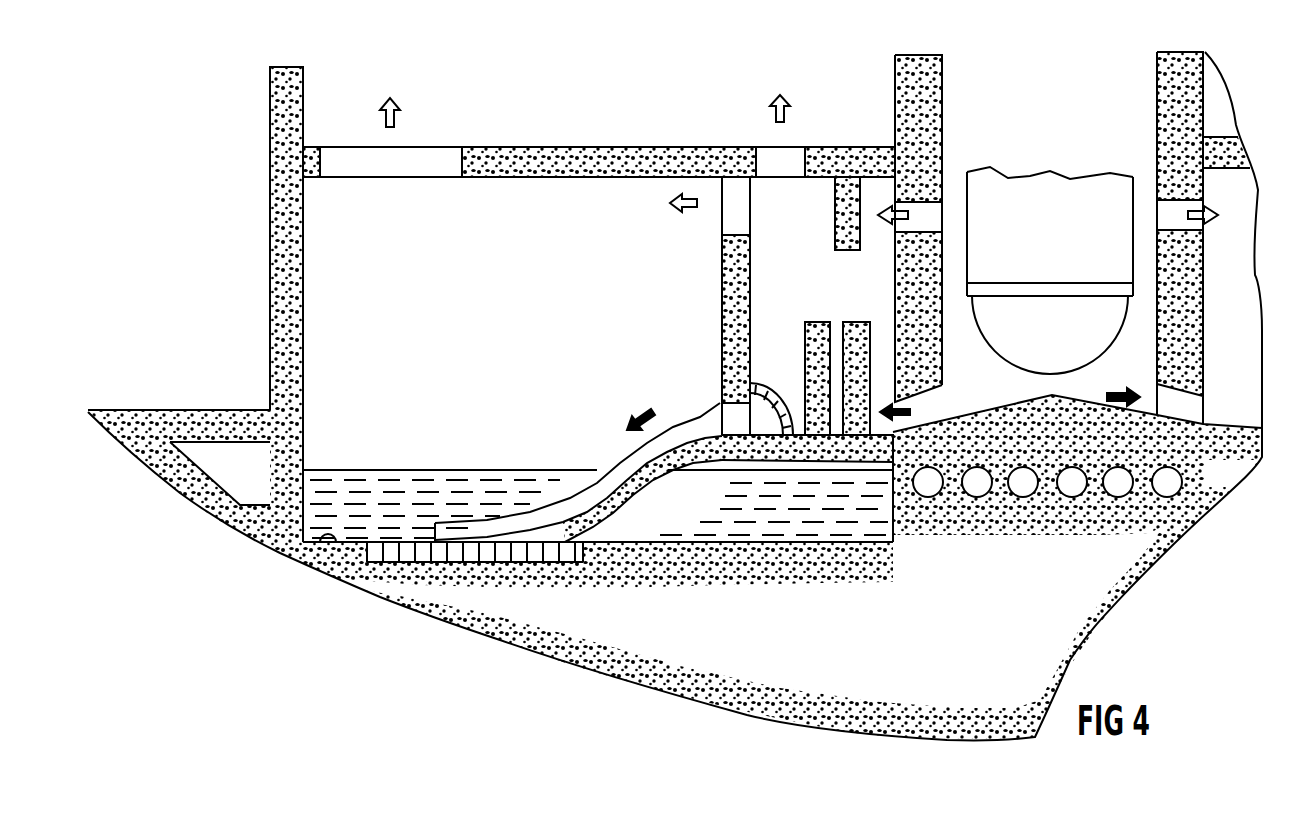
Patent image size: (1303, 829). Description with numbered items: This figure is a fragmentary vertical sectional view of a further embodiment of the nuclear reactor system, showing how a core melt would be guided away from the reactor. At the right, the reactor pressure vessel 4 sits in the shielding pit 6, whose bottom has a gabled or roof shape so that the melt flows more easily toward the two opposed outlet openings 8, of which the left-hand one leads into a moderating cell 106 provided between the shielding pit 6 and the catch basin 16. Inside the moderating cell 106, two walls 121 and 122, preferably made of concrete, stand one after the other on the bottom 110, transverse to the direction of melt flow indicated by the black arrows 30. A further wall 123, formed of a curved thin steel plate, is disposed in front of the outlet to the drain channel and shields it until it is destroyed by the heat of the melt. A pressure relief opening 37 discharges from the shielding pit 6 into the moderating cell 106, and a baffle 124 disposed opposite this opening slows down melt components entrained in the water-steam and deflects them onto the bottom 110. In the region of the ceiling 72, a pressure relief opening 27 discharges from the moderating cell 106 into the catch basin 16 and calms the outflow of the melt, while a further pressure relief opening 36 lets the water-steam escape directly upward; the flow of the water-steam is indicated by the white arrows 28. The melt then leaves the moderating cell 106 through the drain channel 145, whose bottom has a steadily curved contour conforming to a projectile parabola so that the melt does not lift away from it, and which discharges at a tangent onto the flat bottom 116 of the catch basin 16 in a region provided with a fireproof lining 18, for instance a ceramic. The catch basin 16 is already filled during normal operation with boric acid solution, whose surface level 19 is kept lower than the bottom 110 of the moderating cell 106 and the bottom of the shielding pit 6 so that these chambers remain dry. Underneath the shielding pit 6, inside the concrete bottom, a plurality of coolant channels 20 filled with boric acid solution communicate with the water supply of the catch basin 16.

The reactor pressure vessel 4 is at (1057, 196).
The shielding pit 6 is at (1140, 358).
The outlet opening 8 is at (930, 390).
The catch basin 16 is at (490, 202).
The fireproof lining 18 is at (416, 564).
The level 19 is at (372, 462).
The coolant channels 20 is at (1067, 485).
The pressure relief opening 27 is at (735, 205).
The white arrows 28 is at (401, 118).
The black arrows 30 is at (648, 411).
The further pressure relief opening 36 is at (777, 165).
The pressure relief opening 37 is at (930, 218).
The ceiling 72 is at (552, 162).
The moderating cell 106 is at (878, 195).
The bottom 110 is at (833, 430).
The bottom 116 is at (318, 543).
The wall 121 is at (843, 322).
The wall 122 is at (822, 322).
The wall 123 is at (762, 382).
The baffle 124 is at (833, 232).
The drain channel 145 is at (528, 518).